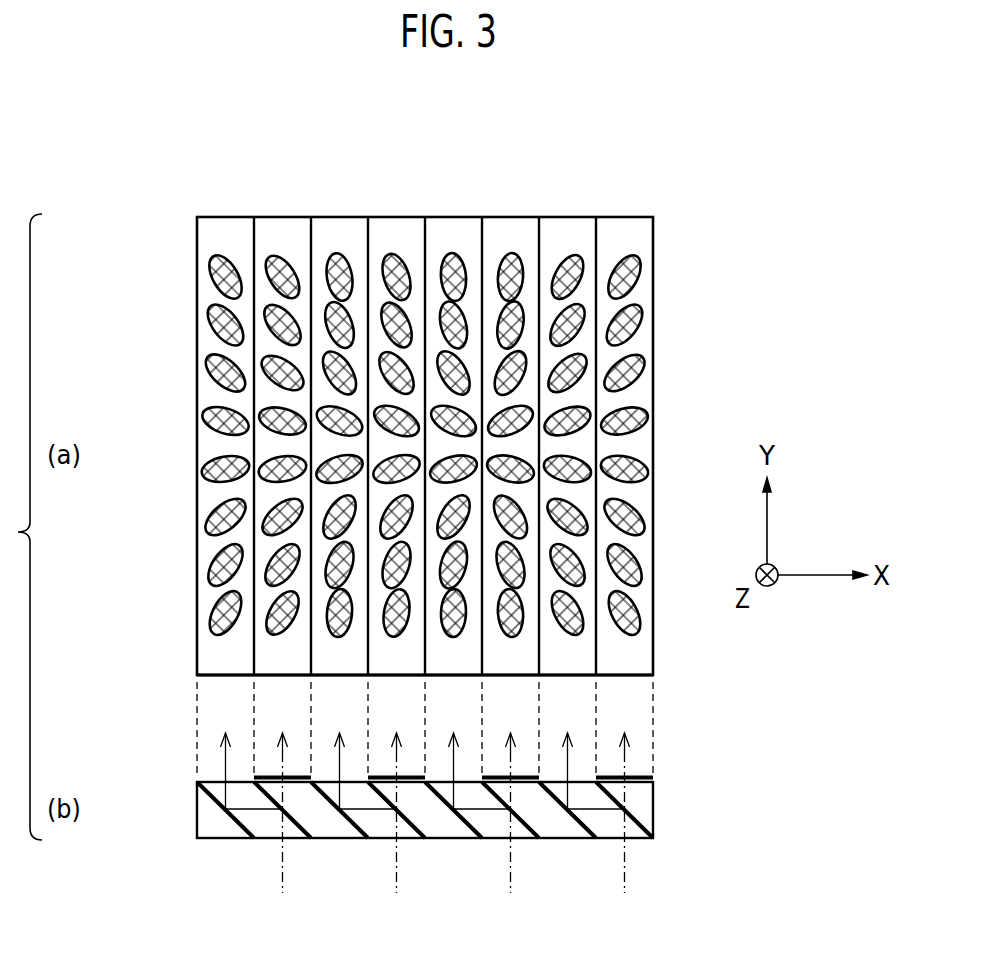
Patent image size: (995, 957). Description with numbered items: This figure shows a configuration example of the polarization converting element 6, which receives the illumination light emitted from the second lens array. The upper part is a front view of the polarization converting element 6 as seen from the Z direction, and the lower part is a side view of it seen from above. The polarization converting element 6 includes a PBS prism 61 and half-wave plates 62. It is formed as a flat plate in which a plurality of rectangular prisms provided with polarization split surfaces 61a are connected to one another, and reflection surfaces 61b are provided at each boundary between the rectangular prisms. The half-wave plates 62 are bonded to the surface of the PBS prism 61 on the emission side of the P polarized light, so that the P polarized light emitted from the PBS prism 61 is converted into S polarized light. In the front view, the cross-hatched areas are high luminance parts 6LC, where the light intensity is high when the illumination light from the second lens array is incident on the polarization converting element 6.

The polarization converting element 6 is at (514, 216).
The high luminance parts 6LC is at (641, 312).
The PBS prism 61 is at (655, 804).
The polarization split surfaces 61a is at (644, 885).
The reflection surfaces 61b is at (586, 873).
The half-wave plates 62 is at (632, 775).